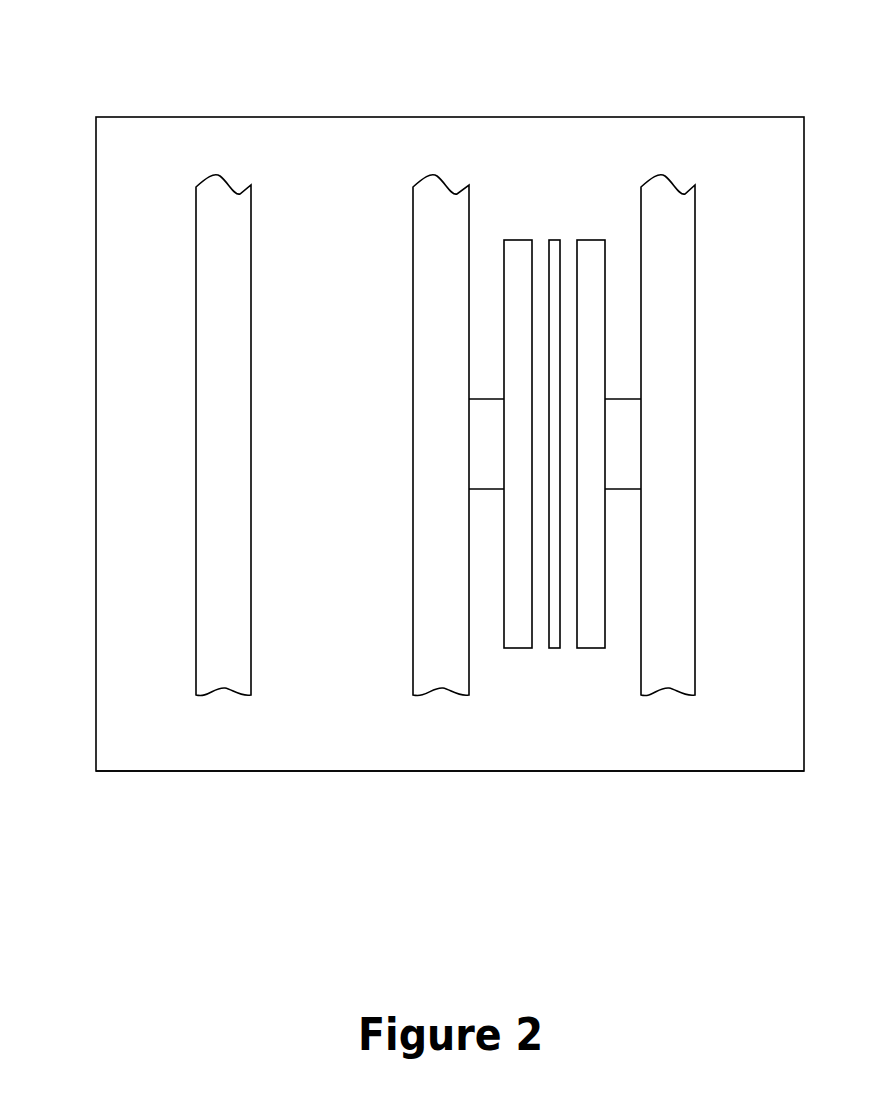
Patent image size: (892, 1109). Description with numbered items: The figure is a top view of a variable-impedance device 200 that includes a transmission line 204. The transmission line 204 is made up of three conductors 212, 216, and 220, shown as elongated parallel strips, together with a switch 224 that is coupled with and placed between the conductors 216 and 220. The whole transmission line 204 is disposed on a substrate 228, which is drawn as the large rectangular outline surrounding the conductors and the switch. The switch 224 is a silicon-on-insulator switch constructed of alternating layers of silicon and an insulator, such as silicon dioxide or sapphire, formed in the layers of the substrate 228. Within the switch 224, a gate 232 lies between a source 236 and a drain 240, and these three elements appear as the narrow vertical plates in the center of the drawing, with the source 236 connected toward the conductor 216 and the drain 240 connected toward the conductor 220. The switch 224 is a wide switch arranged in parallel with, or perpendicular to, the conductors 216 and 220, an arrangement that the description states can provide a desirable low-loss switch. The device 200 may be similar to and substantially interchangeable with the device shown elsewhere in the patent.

The device 200 is at (102, 38).
The transmission line 204 is at (162, 148).
The conductor 212 is at (196, 623).
The conductor 216 is at (413, 625).
The conductor 220 is at (695, 617).
The switch 224 is at (551, 688).
The substrate 228 is at (360, 771).
The gate 232 is at (550, 240).
The source 236 is at (523, 240).
The drain 240 is at (590, 240).